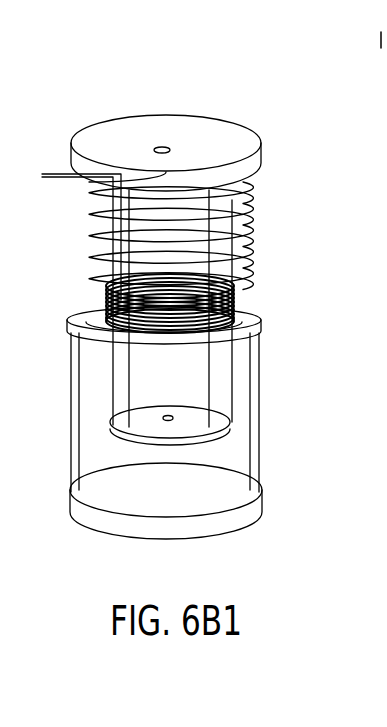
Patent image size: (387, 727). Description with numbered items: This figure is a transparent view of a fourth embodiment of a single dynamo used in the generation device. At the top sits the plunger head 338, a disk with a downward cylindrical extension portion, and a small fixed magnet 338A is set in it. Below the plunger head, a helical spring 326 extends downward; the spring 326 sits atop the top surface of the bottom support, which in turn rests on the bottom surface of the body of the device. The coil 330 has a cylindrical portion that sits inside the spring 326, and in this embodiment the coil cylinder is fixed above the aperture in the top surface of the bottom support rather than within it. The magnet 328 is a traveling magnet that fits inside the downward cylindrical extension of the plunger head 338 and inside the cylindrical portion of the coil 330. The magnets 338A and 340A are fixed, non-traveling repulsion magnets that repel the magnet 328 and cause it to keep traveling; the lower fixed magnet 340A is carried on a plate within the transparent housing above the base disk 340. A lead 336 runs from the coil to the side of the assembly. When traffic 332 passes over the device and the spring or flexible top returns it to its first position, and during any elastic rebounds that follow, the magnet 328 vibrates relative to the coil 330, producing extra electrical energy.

The spring 326 is at (238, 222).
The magnet 328 is at (140, 358).
The coil 330 is at (233, 300).
The traffic 332 is at (161, 113).
The lead wire 336 is at (63, 178).
The plunger head 338 is at (125, 142).
The fixed repulsion magnet 338A is at (169, 147).
The base disk 340 is at (150, 495).
The fixed repulsion magnet 340A is at (172, 421).